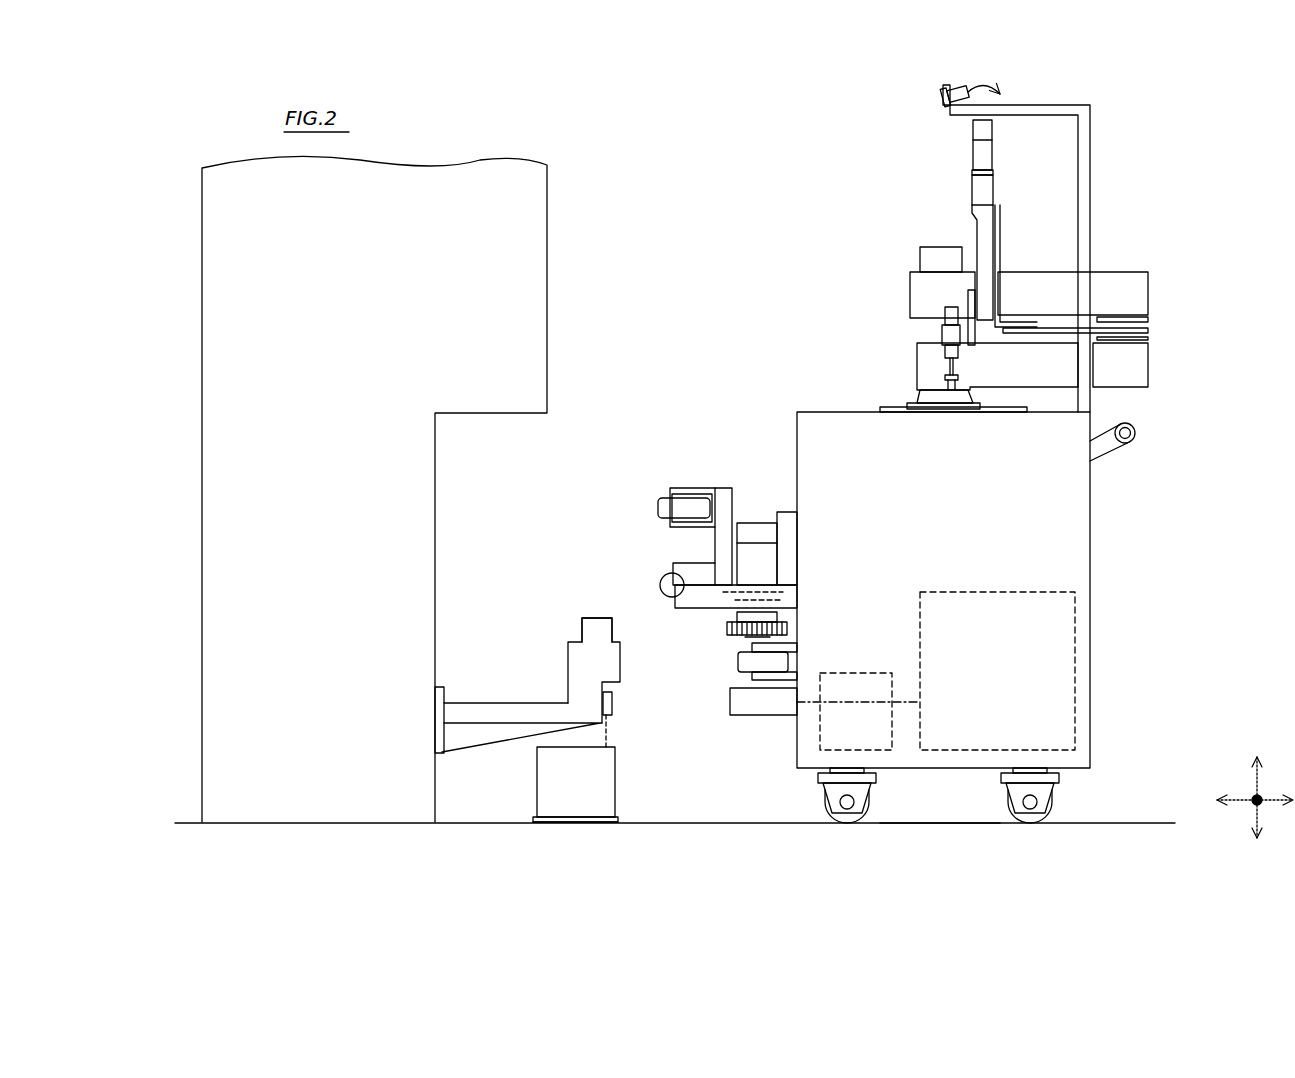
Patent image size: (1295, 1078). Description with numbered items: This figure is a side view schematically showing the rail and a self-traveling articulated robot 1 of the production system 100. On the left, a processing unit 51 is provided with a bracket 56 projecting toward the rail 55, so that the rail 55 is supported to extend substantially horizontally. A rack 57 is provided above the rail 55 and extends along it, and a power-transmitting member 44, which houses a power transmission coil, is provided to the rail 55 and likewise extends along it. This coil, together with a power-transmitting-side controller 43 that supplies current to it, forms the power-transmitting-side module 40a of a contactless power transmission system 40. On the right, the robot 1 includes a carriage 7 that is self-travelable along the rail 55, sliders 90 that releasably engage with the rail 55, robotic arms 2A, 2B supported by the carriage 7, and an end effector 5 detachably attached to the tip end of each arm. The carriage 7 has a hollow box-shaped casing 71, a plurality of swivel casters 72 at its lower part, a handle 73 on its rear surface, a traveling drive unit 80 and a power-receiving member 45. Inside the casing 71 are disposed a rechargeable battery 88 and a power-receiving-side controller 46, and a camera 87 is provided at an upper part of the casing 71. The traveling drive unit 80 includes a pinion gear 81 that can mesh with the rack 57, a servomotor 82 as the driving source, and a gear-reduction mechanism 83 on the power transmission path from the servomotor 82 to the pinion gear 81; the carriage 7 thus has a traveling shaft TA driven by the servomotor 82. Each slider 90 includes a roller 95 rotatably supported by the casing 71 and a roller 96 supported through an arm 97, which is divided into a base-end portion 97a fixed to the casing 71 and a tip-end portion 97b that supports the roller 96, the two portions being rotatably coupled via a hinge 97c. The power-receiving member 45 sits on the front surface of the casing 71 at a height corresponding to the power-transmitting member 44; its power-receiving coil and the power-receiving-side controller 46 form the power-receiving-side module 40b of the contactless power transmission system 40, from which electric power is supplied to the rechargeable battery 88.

The production system 100 is at (740, 208).
The self-traveling articulated robot 1 is at (1044, 247).
The robotic arm 2A is at (1150, 367).
The robotic arm 2B is at (1150, 290).
The end effector 5 is at (932, 307).
The carriage 7 is at (976, 616).
The contactless power transmission system 40 is at (697, 800).
The power-transmitting-side module 40a is at (627, 807).
The power-receiving-side module 40b is at (897, 797).
The power-transmitting-side controller 43 is at (617, 780).
The power-transmitting member 44 is at (612, 707).
The power-receiving member 45 is at (757, 715).
The power-receiving-side controller 46 is at (888, 753).
The processing unit 51 is at (547, 303).
The rail 55 is at (568, 655).
The bracket 56 is at (498, 697).
The rack 57 is at (608, 618).
The casing 71 is at (1092, 537).
The swivel caster 72 is at (825, 802).
The handle 73 is at (1133, 440).
The traveling drive unit 80 is at (719, 565).
The pinion gear 81 is at (743, 638).
The servomotor 82 is at (757, 543).
The gear-reduction mechanism 83 is at (723, 632).
The camera 87 is at (935, 98).
The rechargeable battery 88 is at (1075, 690).
The slider 90 is at (613, 535).
The roller 95 is at (738, 663).
The roller 96 is at (658, 500).
The arm 97 is at (682, 493).
The base-end portion 97a is at (683, 608).
The tip-end portion 97b is at (723, 488).
The hinge 97c is at (668, 573).
The traveling shaft TA is at (747, 640).